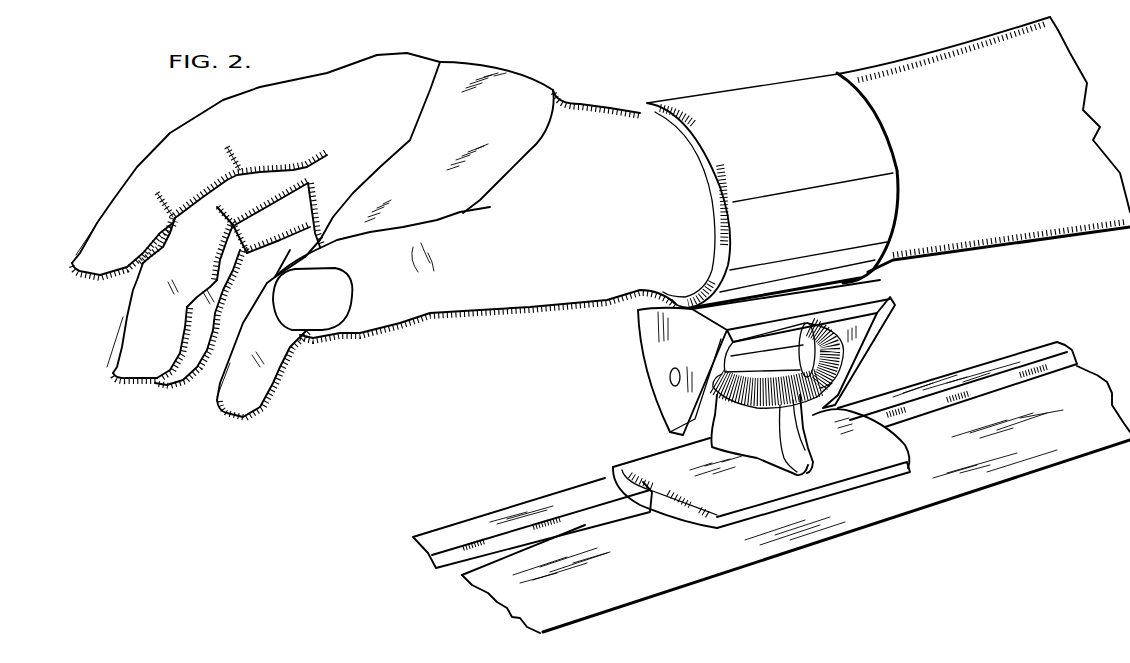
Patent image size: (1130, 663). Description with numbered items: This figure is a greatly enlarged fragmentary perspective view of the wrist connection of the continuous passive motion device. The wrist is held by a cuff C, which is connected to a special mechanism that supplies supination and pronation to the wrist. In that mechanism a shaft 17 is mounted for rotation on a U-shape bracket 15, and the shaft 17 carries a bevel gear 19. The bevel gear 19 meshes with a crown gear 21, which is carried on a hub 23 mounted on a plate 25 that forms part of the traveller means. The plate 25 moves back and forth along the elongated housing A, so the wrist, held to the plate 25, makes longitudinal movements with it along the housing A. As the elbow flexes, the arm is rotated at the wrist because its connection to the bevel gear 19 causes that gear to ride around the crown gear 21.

The U-shape bracket 15 is at (650, 332).
The shaft 17 is at (775, 357).
The bevel gear 19 is at (843, 352).
The crown gear 21 is at (822, 418).
The hub 23 is at (793, 450).
The plate 25 is at (710, 487).
The housing A is at (467, 535).
The cuff C is at (812, 95).